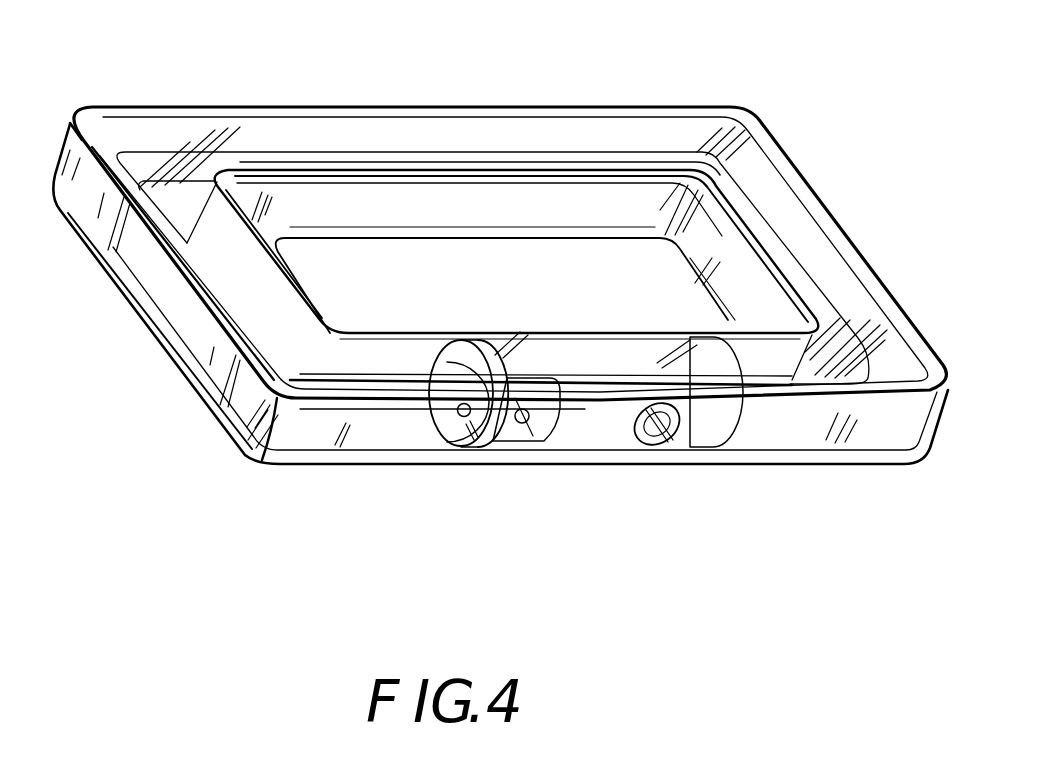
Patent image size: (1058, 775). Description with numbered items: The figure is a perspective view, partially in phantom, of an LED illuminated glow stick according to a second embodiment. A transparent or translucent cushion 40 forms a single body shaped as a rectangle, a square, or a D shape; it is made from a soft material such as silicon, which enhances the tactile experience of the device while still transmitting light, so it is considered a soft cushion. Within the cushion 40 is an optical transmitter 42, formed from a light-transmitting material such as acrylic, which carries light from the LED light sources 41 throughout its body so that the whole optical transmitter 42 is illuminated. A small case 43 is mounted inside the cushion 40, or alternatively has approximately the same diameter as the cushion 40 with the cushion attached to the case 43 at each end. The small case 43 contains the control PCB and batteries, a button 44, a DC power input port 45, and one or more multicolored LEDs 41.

The cushion 40 is at (265, 106).
The multicolored LEDs 41 is at (461, 417).
The optical transmitter 42 is at (376, 153).
The small case 43 is at (604, 437).
The button 44 is at (519, 425).
The DC power input port 45 is at (668, 442).